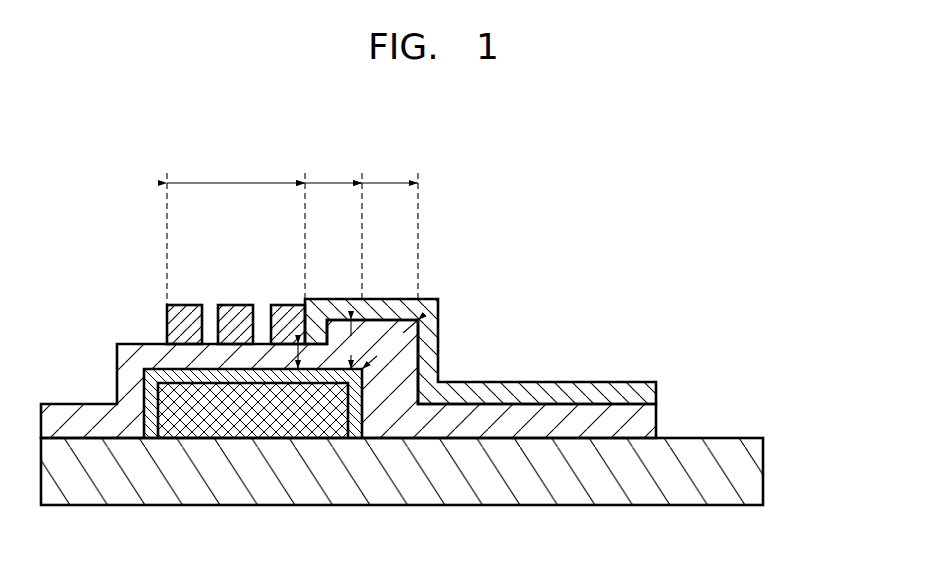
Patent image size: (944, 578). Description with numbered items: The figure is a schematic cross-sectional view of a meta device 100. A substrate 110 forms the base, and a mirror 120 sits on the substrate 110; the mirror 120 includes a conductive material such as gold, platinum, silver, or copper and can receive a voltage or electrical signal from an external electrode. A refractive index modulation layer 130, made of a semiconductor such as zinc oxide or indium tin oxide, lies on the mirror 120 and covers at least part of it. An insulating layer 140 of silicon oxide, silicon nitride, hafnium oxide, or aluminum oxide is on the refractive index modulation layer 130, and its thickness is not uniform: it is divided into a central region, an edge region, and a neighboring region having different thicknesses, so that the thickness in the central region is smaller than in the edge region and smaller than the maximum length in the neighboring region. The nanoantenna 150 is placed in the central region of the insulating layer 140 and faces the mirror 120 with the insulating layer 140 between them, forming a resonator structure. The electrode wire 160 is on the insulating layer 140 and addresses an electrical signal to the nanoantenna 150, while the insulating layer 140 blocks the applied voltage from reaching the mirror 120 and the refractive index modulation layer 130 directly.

The meta device 100 is at (668, 248).
The substrate 110 is at (763, 472).
The mirror 120 is at (210, 420).
The refractive index modulation layer 130 is at (308, 378).
The insulating layer 140 is at (656, 423).
The nanoantenna 150 is at (285, 305).
The electrode wire 160 is at (438, 338).